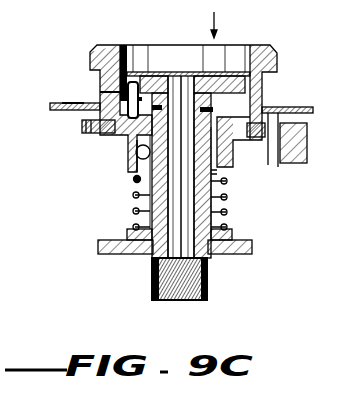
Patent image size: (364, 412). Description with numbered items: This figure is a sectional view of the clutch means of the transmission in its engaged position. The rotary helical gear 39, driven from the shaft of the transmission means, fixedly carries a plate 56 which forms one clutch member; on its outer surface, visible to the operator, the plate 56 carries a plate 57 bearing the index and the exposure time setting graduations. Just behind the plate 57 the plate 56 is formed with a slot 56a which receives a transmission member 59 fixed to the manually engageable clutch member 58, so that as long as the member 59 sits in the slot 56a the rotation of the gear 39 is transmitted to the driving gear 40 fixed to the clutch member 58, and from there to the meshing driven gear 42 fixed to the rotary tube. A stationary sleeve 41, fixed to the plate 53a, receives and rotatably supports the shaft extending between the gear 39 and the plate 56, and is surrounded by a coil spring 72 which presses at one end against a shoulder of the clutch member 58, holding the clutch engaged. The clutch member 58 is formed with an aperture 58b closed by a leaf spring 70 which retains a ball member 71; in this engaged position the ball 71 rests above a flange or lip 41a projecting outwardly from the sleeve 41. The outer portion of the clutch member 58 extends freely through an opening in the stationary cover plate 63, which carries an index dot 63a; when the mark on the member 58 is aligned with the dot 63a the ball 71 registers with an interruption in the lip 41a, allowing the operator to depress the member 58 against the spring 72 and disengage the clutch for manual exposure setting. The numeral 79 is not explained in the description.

The rotary helical gear 39 is at (207, 287).
The driving gear 40 is at (267, 107).
The sleeve 41 is at (152, 247).
The flange or lip 41a is at (216, 172).
The driven gear 42 is at (303, 137).
The plate 53a is at (222, 248).
The plate 56 is at (222, 77).
The slot 56a is at (132, 82).
The plate 57 is at (156, 72).
The manually engageable clutch member 58 is at (264, 50).
The aperture 58b is at (136, 152).
The transmission member 59 is at (101, 96).
The cover plate 63 is at (57, 103).
The index dot 63a is at (72, 103).
The leaf spring 70 is at (134, 179).
The ball member 71 is at (130, 165).
The coil spring 72 is at (227, 211).
The spring 79 is at (133, 195).